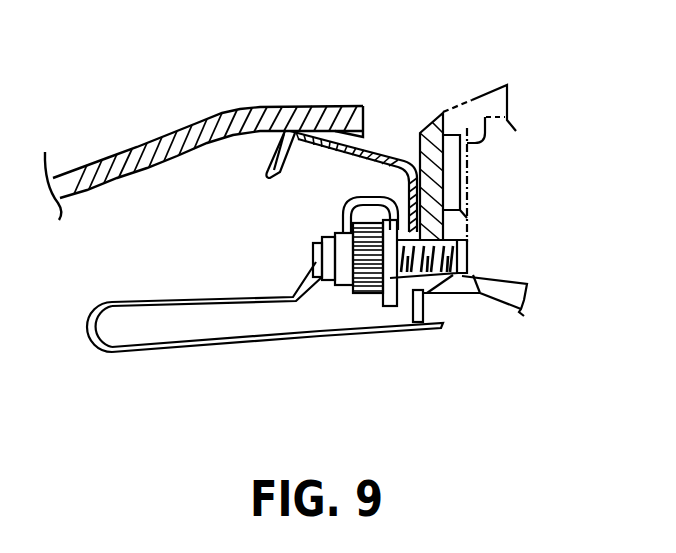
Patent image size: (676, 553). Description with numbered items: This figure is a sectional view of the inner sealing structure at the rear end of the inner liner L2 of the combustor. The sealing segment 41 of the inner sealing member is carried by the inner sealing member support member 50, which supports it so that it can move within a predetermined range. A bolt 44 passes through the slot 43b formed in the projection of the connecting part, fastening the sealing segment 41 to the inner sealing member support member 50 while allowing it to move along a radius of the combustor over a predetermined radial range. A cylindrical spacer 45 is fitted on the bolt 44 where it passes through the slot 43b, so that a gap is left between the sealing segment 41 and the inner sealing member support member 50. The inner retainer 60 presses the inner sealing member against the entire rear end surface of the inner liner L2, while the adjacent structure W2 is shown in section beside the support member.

The inner liner L2 is at (311, 106).
The sealing segment 41 is at (392, 153).
The vehicle body panel W2 is at (473, 98).
The inner sealing member support member 50 is at (468, 224).
The cylindrical spacer 45 is at (386, 196).
The bolt 44 is at (472, 262).
The slot 43b is at (424, 298).
The inner retainer 60 is at (152, 357).